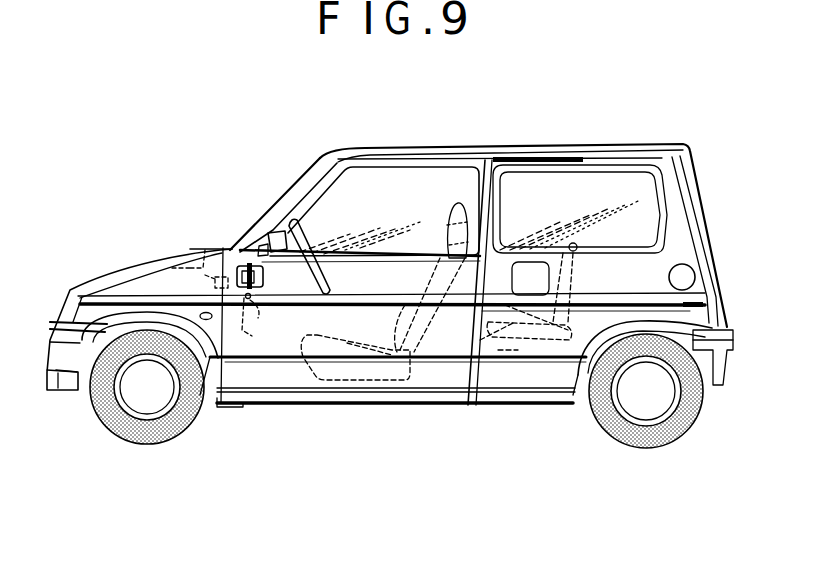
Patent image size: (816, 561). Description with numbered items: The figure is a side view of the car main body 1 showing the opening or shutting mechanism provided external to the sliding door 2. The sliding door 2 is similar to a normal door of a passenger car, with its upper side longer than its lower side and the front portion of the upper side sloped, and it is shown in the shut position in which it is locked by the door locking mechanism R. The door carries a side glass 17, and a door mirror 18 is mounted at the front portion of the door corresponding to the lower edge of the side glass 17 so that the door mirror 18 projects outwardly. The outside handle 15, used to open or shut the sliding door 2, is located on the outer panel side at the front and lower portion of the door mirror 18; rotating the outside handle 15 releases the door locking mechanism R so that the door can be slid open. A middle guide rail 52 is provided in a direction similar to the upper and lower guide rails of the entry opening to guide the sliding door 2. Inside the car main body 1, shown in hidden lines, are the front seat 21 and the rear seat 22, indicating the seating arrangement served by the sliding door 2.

The car main body 1 is at (642, 142).
The sliding door 2 is at (292, 347).
The outside handle 15 is at (237, 266).
The side glass 17 is at (413, 175).
The door mirror 18 is at (277, 230).
The front seat 21 is at (371, 370).
The rear seat 22 is at (525, 330).
The middle guide rail 52 is at (672, 287).
The door locking mechanism R is at (200, 262).